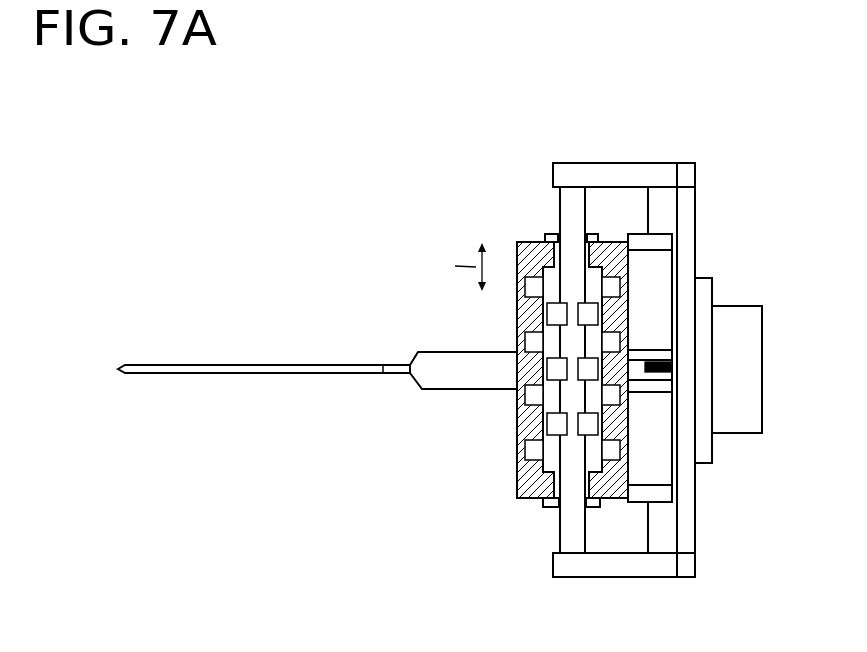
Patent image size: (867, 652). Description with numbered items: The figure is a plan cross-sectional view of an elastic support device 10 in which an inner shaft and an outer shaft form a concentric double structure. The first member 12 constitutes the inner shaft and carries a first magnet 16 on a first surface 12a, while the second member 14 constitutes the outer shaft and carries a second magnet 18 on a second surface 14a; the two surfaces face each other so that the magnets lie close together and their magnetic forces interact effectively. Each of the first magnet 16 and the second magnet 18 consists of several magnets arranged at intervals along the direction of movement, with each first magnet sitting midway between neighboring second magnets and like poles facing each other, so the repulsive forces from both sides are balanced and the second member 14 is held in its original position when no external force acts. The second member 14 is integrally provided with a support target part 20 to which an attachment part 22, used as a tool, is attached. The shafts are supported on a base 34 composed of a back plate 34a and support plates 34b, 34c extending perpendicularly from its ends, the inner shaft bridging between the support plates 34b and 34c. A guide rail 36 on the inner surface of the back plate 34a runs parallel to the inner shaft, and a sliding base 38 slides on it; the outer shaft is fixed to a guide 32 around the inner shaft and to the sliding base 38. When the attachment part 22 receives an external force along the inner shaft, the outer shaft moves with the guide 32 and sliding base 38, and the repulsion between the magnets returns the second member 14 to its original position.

The elastic support device 10 is at (432, 60).
The first member 12 is at (560, 523).
The first surface 12a is at (537, 413).
The second member 14 is at (518, 468).
The second surface 14a is at (540, 280).
The first magnet 16 is at (584, 302).
The second magnet 18 is at (612, 275).
The support target part 20 is at (463, 356).
The attachment part 22 is at (303, 364).
The guide 32 is at (553, 233).
The base 34 is at (671, 374).
The back plate 34a is at (690, 243).
The support plate 34b is at (636, 168).
The support plate 34c is at (637, 567).
The guide rail 36 is at (660, 218).
The sliding base 38 is at (660, 272).